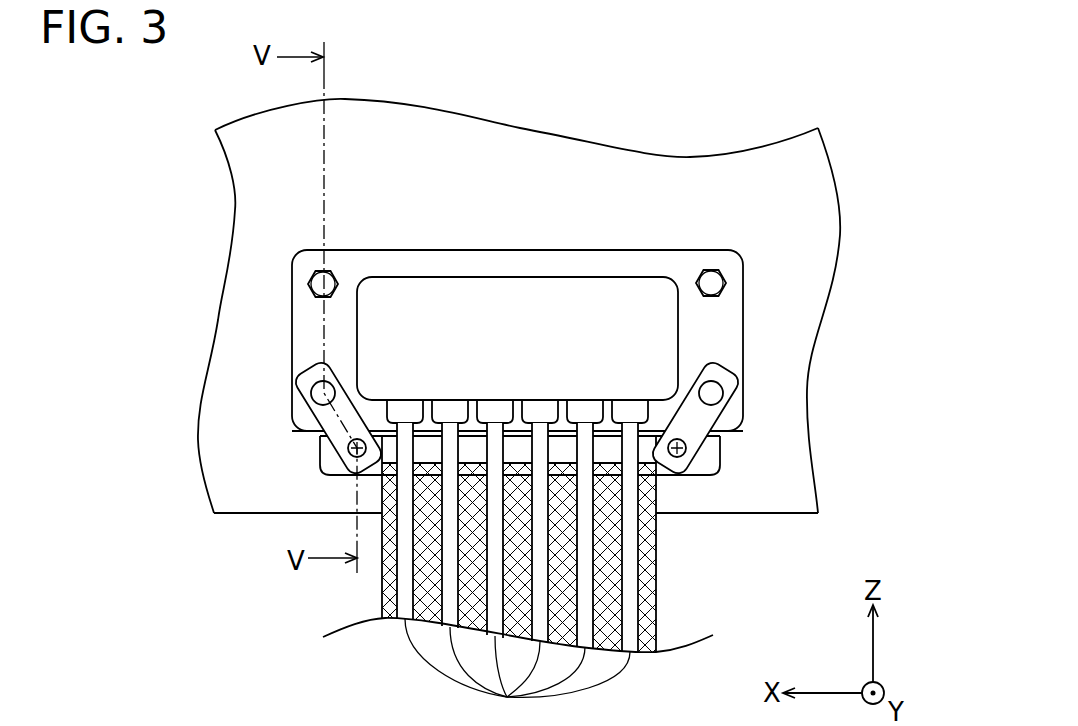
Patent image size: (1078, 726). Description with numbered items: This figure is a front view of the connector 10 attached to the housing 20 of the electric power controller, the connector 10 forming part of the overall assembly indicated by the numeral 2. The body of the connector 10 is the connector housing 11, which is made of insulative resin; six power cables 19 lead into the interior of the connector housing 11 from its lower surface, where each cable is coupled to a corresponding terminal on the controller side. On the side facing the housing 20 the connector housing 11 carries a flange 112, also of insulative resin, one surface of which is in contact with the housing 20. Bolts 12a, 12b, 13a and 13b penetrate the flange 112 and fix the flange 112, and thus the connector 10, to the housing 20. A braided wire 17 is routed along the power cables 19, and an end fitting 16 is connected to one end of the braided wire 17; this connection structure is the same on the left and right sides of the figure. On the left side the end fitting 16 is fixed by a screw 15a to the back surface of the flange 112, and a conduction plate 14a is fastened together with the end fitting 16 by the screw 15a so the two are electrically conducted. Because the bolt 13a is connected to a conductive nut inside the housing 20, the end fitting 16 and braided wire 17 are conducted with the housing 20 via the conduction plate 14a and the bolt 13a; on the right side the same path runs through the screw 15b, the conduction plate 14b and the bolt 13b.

The connector 2 is at (514, 366).
The connector 10 is at (484, 242).
The connector housing 11 is at (607, 302).
The flange 112 is at (550, 262).
The bolt 12a is at (315, 287).
The bolt 12b is at (718, 282).
The bolt 13a is at (311, 398).
The bolt 13b is at (722, 394).
The conduction plate 14a is at (312, 436).
The conduction plate 14b is at (703, 416).
The screw 15a is at (332, 471).
The screw 15b is at (688, 454).
The end fitting 16 is at (650, 458).
The braided wire 17 is at (653, 596).
The power cables 19 is at (518, 563).
The housing 20 is at (237, 150).